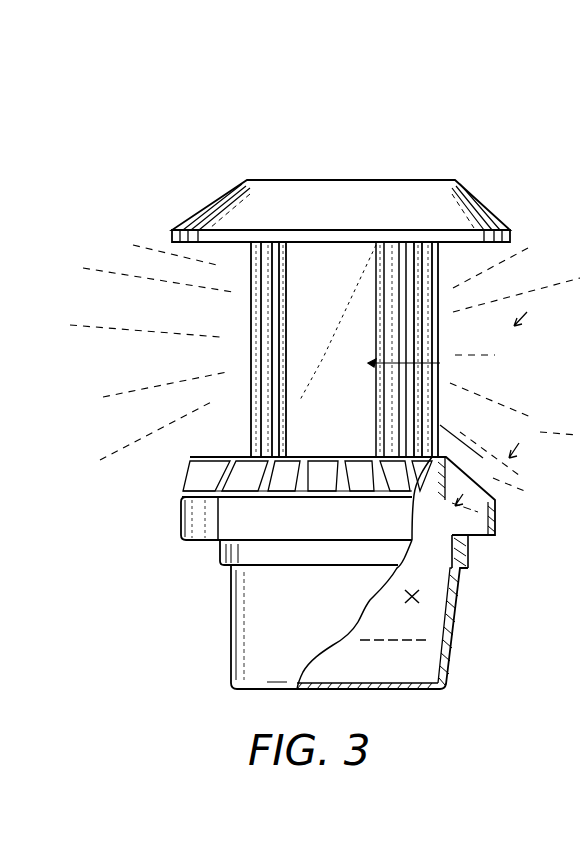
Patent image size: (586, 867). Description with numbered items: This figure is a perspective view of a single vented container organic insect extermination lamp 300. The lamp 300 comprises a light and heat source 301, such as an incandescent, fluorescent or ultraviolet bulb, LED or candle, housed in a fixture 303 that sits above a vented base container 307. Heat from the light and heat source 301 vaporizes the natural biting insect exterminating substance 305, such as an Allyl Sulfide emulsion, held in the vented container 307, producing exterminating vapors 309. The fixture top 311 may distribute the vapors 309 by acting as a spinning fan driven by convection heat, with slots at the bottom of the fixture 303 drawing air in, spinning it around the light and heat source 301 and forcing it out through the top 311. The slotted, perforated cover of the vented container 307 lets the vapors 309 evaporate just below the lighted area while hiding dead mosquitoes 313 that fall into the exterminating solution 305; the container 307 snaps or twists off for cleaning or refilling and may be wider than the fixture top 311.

The lamp 300 is at (398, 148).
The light and heat source 301 is at (440, 363).
The fixture 303 is at (438, 376).
The natural biting insect exterminating substance 305 is at (440, 655).
The vented container 307 is at (495, 518).
The exterminating vapors 309 is at (227, 462).
The fixture top 311 is at (472, 206).
The dead mosquitoes 313 is at (417, 593).